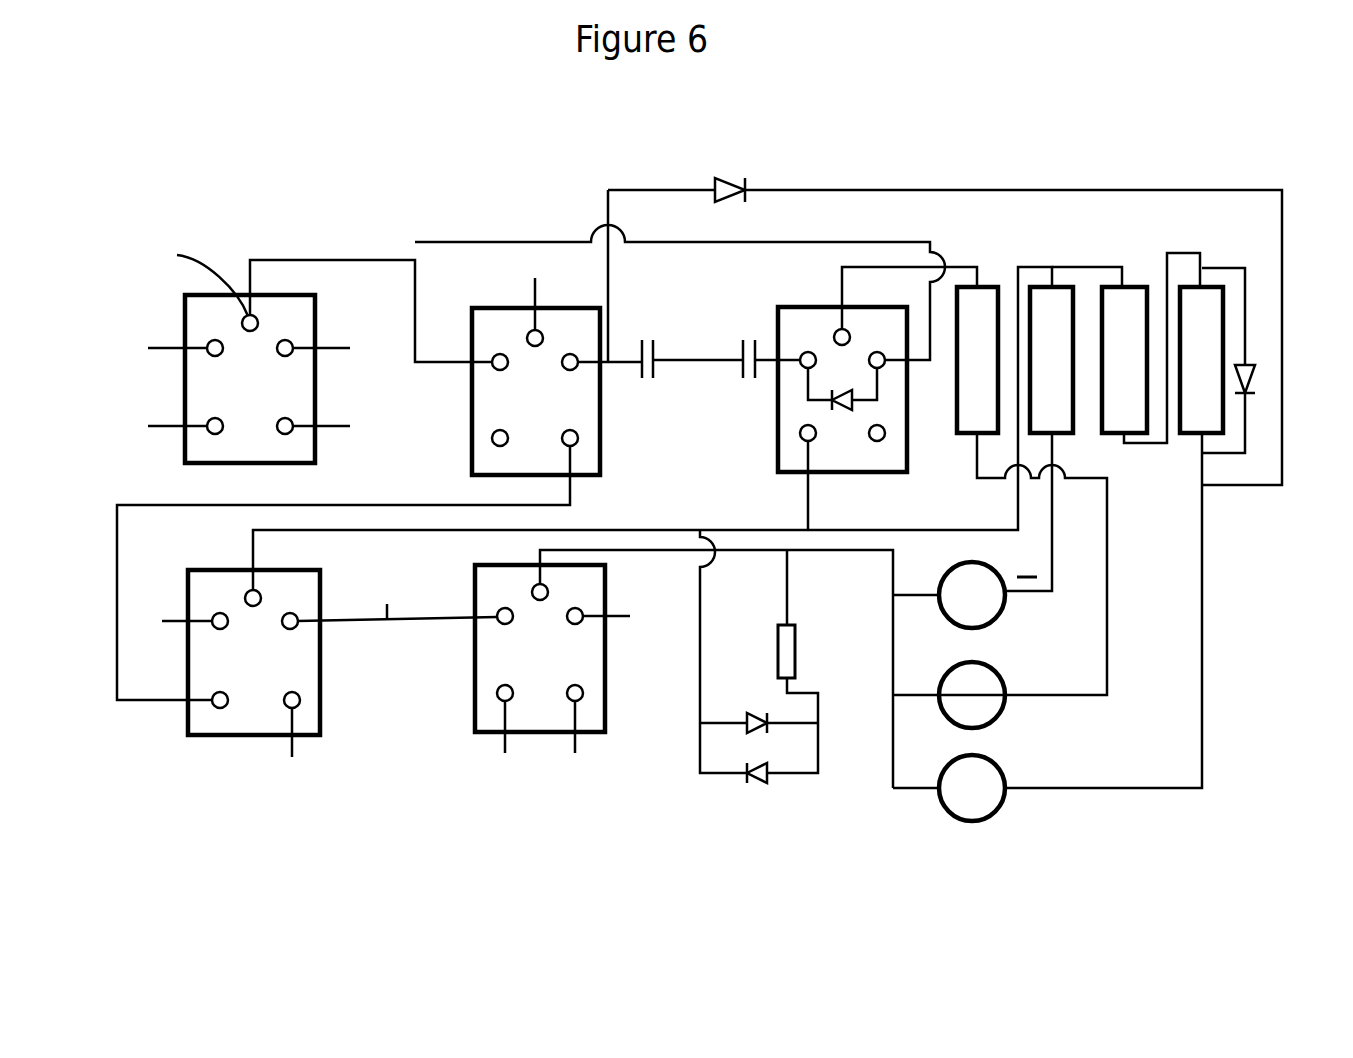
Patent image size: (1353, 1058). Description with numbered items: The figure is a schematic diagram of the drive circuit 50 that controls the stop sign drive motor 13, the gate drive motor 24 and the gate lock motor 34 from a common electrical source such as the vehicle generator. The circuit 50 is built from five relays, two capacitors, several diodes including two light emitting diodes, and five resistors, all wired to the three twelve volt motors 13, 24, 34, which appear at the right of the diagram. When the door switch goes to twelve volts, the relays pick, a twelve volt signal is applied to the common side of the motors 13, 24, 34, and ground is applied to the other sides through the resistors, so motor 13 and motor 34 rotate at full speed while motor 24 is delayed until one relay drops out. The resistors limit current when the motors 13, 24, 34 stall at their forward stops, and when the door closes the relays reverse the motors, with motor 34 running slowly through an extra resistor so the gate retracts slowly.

The drive circuit 50 is at (458, 196).
The stop sign drive motor 13 is at (996, 621).
The gate drive motor 24 is at (953, 712).
The gate lock motor 34 is at (993, 812).